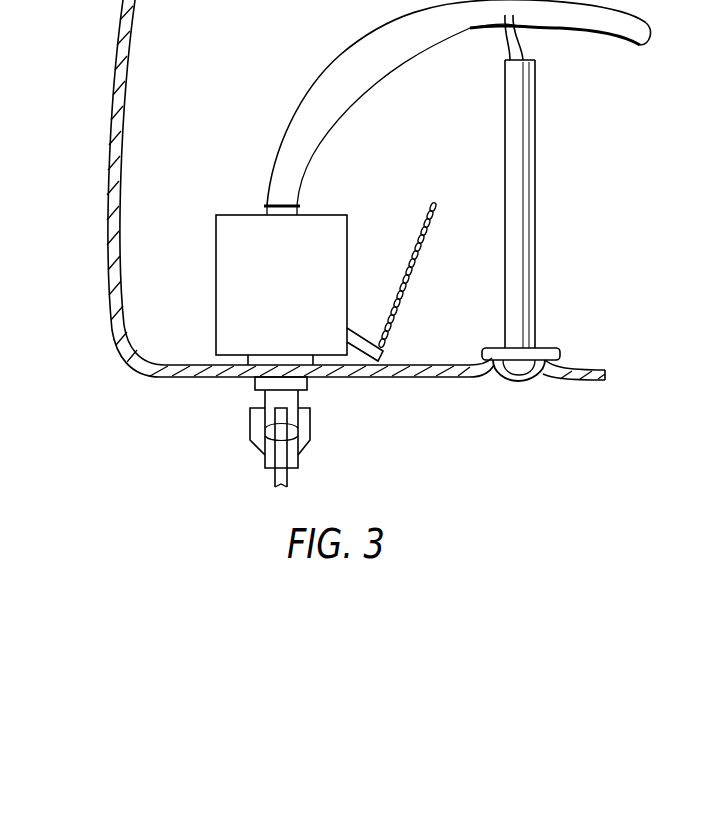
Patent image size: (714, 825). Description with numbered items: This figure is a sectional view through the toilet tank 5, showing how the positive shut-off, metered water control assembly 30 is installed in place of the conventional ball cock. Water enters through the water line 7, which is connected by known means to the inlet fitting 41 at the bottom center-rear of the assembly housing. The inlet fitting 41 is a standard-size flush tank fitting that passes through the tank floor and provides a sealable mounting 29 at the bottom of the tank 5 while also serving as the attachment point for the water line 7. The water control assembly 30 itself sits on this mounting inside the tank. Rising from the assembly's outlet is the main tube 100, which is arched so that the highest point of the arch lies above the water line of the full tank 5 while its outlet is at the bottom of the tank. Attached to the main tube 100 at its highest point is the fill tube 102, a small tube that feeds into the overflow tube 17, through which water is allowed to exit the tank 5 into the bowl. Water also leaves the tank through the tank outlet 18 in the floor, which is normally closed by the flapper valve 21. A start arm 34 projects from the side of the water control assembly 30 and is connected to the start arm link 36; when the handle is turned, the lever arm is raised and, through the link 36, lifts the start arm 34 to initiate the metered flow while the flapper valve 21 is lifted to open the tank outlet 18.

The tank 5 is at (107, 130).
The main tube 100 is at (338, 80).
The fill tube 102 is at (517, 43).
The overflow tube 17 is at (524, 197).
The water control assembly 30 is at (214, 268).
The sealable mounting 29 is at (248, 365).
The start arm 34 is at (364, 340).
The start arm link 36 is at (420, 266).
The inlet fitting 41 is at (263, 400).
The water line 7 is at (278, 478).
The flapper valve 21 is at (512, 382).
The tank outlet 18 is at (544, 378).